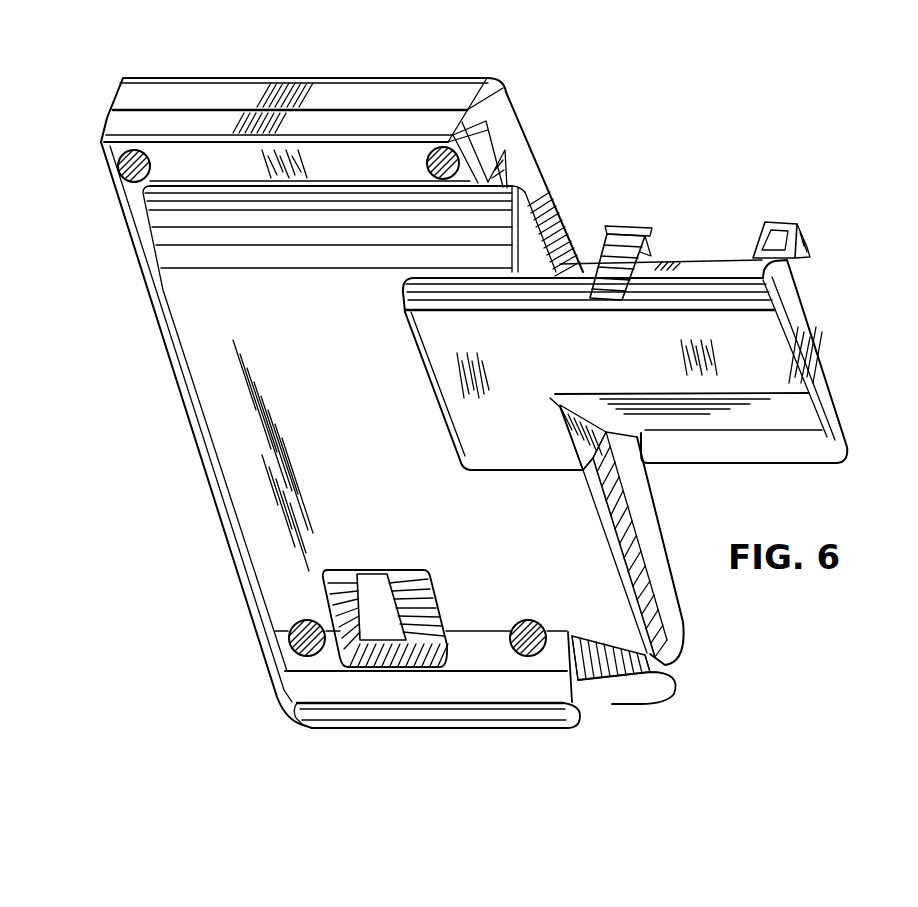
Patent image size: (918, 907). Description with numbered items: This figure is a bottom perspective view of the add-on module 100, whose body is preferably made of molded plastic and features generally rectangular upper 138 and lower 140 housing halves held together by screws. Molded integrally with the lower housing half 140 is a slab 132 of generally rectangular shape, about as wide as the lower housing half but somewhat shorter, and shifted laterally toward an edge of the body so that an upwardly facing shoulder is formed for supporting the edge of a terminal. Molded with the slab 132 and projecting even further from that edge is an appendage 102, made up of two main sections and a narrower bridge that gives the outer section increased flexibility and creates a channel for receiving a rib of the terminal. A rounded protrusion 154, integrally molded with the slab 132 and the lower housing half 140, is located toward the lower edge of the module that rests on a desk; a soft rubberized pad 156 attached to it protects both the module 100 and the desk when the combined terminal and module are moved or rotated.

The add-on module 100 is at (176, 451).
The appendage 102 is at (563, 368).
The slab 132 is at (220, 340).
The upper housing half 138 is at (507, 118).
The lower housing half 140 is at (412, 118).
The rounded protrusion 154 is at (300, 688).
The soft rubberized pad 156 is at (378, 718).